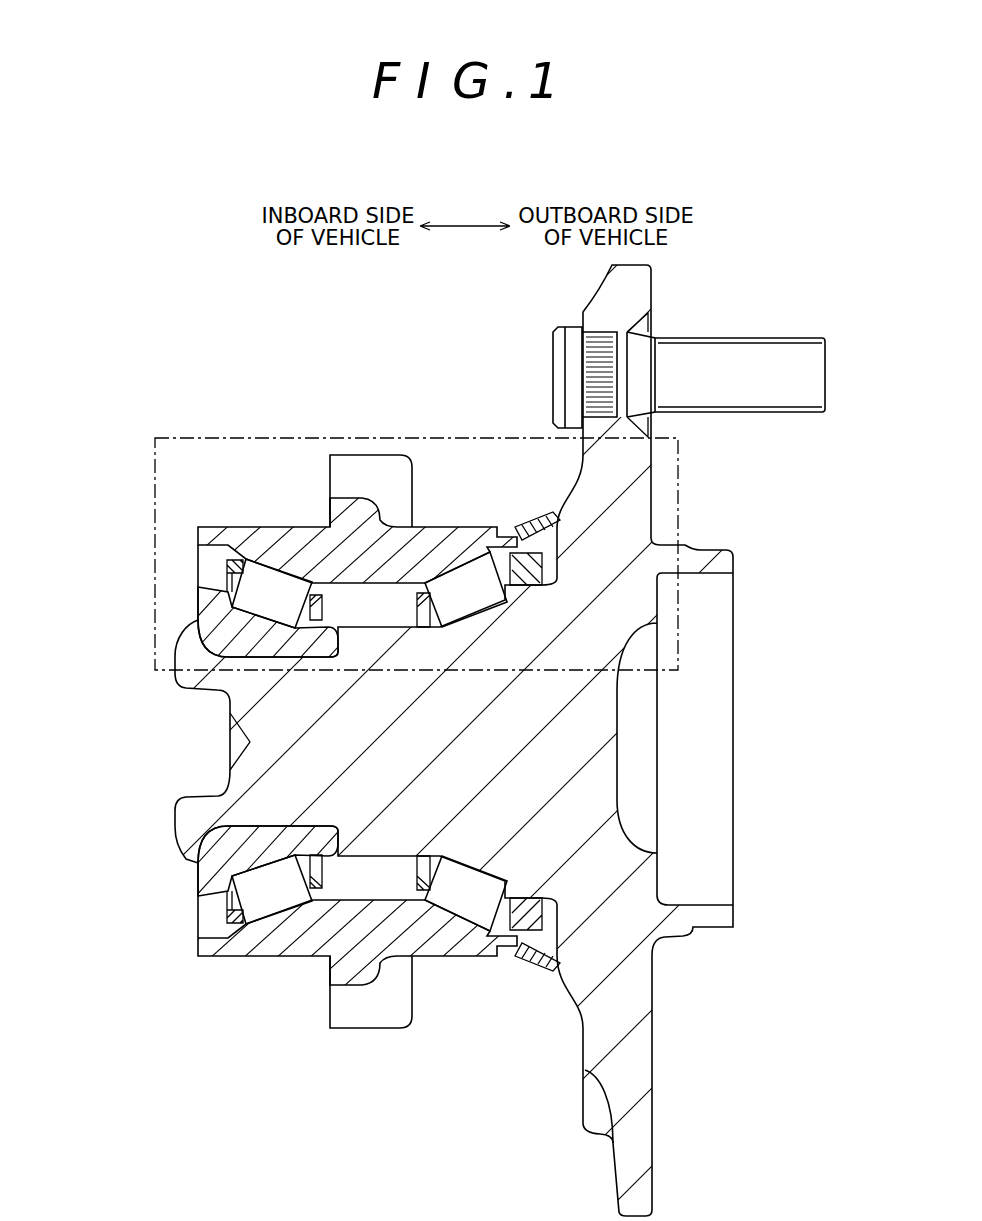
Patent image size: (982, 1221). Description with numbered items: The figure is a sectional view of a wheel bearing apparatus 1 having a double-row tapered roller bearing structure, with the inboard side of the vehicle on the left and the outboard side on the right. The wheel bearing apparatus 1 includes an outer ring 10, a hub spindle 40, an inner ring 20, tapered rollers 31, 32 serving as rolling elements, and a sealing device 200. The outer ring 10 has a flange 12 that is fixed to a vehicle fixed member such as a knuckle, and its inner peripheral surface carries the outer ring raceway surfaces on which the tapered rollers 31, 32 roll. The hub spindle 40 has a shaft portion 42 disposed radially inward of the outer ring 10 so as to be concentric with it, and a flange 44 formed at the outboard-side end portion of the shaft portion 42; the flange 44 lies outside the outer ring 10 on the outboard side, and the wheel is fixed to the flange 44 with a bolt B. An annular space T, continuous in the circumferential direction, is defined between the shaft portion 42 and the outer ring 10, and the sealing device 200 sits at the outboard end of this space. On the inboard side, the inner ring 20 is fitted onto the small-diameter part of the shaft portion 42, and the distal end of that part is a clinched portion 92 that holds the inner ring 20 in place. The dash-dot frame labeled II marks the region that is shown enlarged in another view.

The wheel bearing apparatus 1 is at (215, 379).
The outer ring 10 is at (300, 537).
The flange 12 is at (352, 505).
The inner ring 20 is at (206, 605).
The tapered rollers 31 is at (460, 582).
The tapered rollers 32 is at (262, 585).
The hub spindle 40 is at (613, 943).
The shaft portion 42 is at (290, 720).
The flange 44 is at (628, 300).
The clinched portion 92 is at (192, 643).
The sealing device 200 is at (556, 552).
The bolt B is at (766, 360).
The annular space T is at (391, 592).
The section II is at (678, 462).